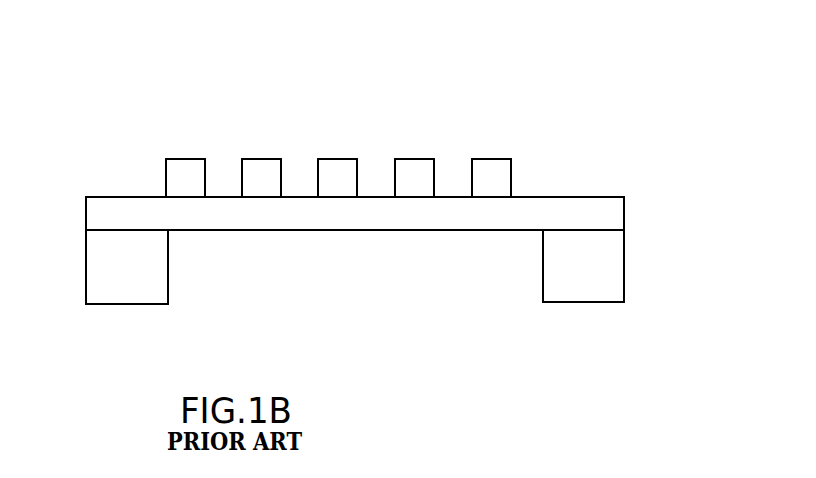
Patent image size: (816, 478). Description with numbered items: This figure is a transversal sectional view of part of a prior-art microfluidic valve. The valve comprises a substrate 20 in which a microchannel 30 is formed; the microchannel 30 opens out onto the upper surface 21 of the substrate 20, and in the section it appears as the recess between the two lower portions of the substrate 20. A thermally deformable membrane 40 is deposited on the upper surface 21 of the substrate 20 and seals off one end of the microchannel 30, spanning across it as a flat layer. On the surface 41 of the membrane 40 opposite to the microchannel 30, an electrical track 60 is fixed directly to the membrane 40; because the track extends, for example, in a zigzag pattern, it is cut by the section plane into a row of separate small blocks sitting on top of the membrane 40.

The substrate 20 is at (624, 268).
The upper surface 21 is at (597, 230).
The microchannel 30 is at (378, 293).
The thermally deformable membrane 40 is at (584, 182).
The surface of the membrane 41 is at (550, 190).
The electrical track 60 is at (236, 151).